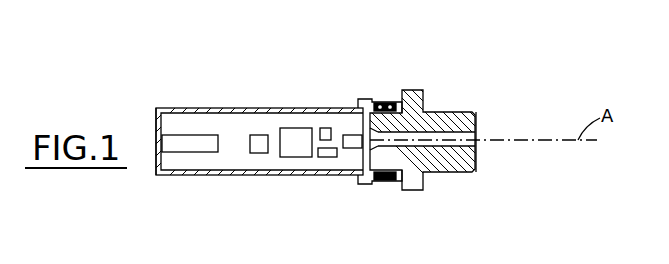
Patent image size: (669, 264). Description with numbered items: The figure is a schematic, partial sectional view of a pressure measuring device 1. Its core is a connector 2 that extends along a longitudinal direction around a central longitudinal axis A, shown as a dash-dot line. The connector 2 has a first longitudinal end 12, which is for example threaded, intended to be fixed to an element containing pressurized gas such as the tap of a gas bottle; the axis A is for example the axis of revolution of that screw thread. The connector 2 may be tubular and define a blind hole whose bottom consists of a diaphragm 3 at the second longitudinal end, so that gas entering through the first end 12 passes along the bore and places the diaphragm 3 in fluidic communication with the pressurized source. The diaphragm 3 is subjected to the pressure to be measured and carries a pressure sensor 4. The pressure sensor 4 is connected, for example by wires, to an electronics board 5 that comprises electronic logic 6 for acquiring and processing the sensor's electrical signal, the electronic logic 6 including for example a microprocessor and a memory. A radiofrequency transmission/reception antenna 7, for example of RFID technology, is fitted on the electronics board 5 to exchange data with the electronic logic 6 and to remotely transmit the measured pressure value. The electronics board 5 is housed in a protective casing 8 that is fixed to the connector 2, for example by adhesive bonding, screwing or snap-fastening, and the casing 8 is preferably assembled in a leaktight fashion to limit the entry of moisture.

The pressure measuring device 1 is at (513, 76).
The connector 2 is at (457, 157).
The diaphragm 3 is at (377, 140).
The pressure sensor 4 is at (356, 128).
The electronics board 5 is at (238, 122).
The electronic logic 6 is at (295, 143).
The transmission/reception antenna 7 is at (192, 143).
The protective casing 8 is at (200, 174).
The first longitudinal end 12 is at (482, 118).